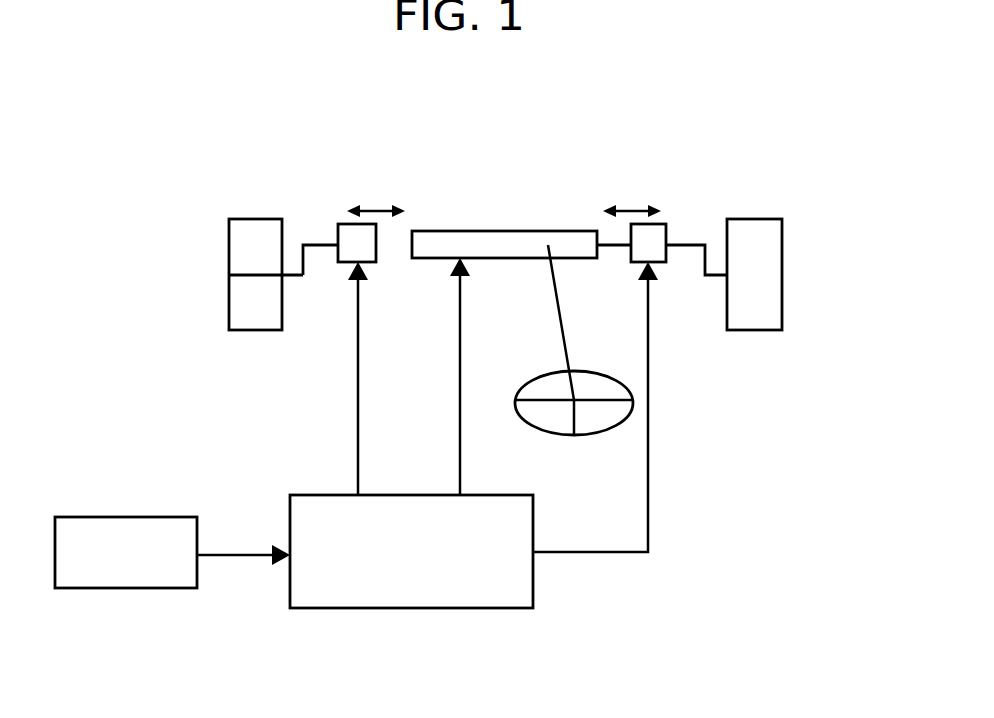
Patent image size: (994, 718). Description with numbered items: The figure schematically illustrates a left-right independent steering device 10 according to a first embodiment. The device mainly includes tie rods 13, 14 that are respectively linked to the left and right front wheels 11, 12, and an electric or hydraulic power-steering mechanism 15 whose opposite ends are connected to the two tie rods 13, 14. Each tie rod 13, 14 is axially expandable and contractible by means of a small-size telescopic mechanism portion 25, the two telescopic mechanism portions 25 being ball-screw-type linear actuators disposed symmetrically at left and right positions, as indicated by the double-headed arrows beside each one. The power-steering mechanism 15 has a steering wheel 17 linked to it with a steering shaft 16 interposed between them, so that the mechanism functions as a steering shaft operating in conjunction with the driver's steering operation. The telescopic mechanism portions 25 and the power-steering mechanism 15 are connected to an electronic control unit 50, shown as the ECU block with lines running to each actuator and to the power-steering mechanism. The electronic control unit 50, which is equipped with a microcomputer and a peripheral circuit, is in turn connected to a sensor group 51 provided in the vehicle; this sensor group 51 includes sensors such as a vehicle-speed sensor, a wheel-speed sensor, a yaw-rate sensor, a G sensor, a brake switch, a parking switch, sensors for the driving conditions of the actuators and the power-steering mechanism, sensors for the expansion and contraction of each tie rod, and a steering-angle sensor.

The left-right independent steering device 10 is at (513, 158).
The left front wheel 11 is at (229, 272).
The right front wheel 12 is at (782, 297).
The tie rod 13 is at (362, 195).
The tie rod 14 is at (657, 195).
The power-steering mechanism 15 is at (470, 231).
The steering shaft 16 is at (558, 316).
The steering wheel 17 is at (595, 434).
The telescopic mechanism portion 25 is at (377, 255).
The electronic control unit 50 is at (332, 495).
The sensor group 51 is at (122, 517).